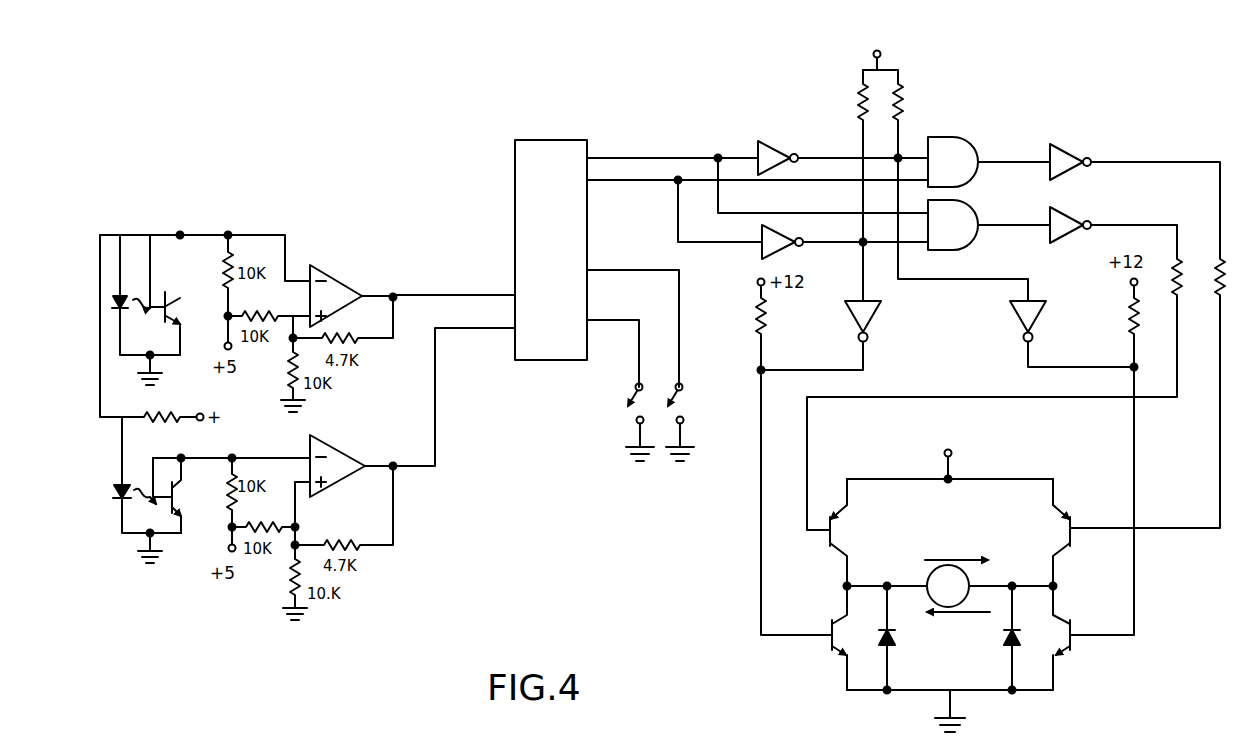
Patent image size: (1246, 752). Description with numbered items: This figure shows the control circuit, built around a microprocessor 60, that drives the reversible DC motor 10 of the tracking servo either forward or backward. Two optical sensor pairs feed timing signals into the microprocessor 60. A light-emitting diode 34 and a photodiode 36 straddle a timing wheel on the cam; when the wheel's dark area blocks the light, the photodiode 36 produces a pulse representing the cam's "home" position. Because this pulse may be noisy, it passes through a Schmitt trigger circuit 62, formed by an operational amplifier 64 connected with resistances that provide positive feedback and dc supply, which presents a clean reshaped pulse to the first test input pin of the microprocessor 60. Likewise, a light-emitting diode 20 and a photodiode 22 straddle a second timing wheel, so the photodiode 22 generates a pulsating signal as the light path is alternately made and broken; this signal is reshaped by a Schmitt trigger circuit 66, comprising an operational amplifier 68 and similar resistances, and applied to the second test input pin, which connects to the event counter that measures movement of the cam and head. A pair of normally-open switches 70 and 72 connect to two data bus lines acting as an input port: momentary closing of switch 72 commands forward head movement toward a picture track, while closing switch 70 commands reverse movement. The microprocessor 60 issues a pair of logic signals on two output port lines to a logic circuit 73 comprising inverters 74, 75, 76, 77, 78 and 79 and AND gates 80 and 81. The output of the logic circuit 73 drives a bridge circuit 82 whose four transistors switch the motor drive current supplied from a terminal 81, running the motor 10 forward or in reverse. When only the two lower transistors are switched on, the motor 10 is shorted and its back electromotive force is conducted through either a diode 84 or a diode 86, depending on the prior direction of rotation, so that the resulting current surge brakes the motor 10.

The reversible DC motor 10 is at (970, 590).
The light-emitting diode 20 is at (116, 491).
The photodiode 22 is at (185, 501).
The light-emitting diode 34 is at (121, 294).
The photodiode 36 is at (169, 305).
The microprocessor 60 is at (555, 233).
The Schmitt trigger circuit 62 is at (340, 271).
The operational amplifier 64 is at (336, 318).
The Schmitt trigger circuit 66 is at (336, 439).
The operational amplifier 68 is at (334, 492).
The normally-open switch 70 is at (629, 395).
The normally-open switch 72 is at (672, 406).
The logic circuit 73 is at (949, 110).
The inverter 74 is at (780, 151).
The inverter 75 is at (790, 239).
The inverter 76 is at (876, 316).
The inverter 77 is at (1041, 315).
The inverter 78 is at (1074, 141).
The inverter 79 is at (1074, 214).
The AND gate 80 is at (971, 141).
The AND gate 81 is at (974, 214).
The bridge circuit 82 is at (1055, 468).
The diode 84 is at (892, 640).
The diode 86 is at (1008, 640).